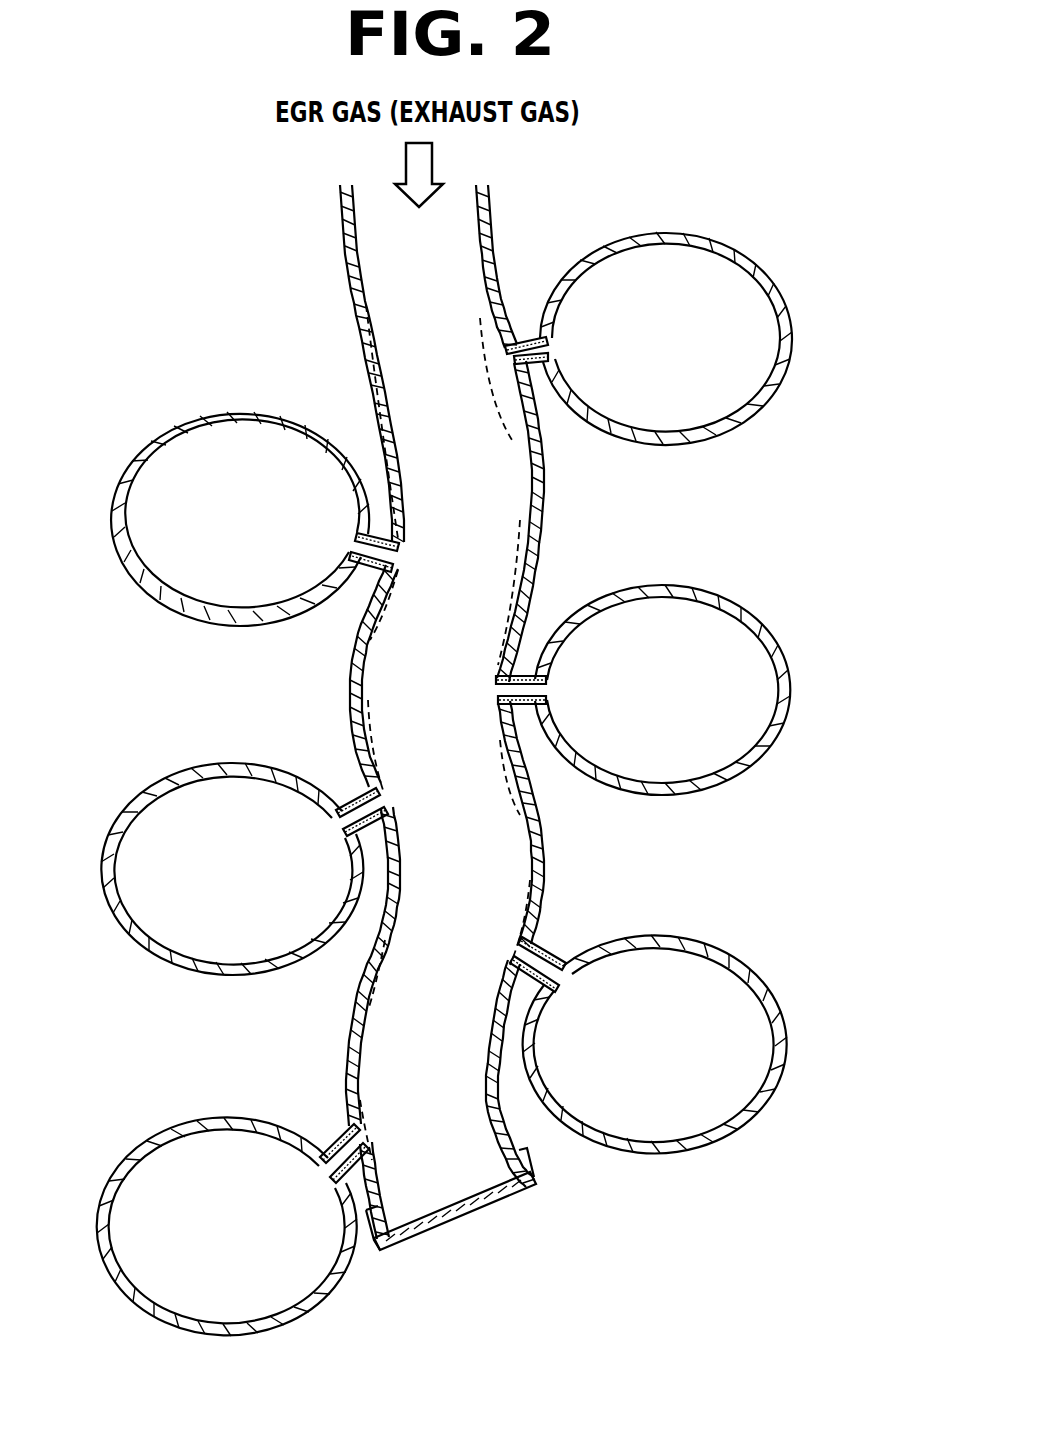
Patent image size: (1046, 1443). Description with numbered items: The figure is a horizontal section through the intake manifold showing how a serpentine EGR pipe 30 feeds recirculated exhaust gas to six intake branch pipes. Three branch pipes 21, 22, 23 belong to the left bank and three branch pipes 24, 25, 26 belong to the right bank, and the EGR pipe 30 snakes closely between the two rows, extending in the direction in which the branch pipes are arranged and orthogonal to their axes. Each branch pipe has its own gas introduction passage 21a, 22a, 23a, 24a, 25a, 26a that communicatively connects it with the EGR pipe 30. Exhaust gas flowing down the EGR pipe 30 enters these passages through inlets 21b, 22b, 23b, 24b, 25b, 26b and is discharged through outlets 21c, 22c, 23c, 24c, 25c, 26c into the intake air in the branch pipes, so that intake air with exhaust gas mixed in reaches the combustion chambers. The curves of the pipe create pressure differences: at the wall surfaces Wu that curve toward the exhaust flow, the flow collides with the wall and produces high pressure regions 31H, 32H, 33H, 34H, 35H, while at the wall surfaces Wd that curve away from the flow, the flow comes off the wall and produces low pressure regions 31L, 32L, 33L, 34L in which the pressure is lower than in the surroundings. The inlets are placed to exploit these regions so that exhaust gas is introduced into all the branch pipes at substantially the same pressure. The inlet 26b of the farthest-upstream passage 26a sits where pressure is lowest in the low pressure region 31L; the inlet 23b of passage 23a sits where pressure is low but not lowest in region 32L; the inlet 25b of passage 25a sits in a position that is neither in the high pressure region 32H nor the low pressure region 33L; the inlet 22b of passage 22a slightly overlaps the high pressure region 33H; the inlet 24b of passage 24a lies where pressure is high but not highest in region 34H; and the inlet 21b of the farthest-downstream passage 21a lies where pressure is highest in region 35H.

The branch pipe 21 is at (158, 1135).
The branch pipe 22 is at (165, 775).
The branch pipe 23 is at (165, 420).
The branch pipe 24 is at (705, 935).
The branch pipe 25 is at (708, 588).
The branch pipe 26 is at (712, 240).
The gas introduction passage 21a is at (342, 1140).
The inlet 21b is at (370, 1125).
The outlet 21c is at (328, 1175).
The gas introduction passage 22a is at (340, 800).
The inlet 22b is at (392, 800).
The outlet 22c is at (340, 822).
The gas introduction passage 23a is at (350, 575).
The inlet 23b is at (400, 549).
The outlet 23c is at (352, 540).
The gas introduction passage 24a is at (558, 960).
The inlet 24b is at (512, 945).
The outlet 24c is at (562, 988).
The gas introduction passage 25a is at (530, 650).
The inlet 25b is at (495, 683).
The outlet 25c is at (548, 692).
The gas introduction passage 26a is at (530, 336).
The inlet 26b is at (512, 357).
The outlet 26c is at (547, 348).
The EGR pipe 30 is at (342, 200).
The high pressure region 31H is at (366, 305).
The low pressure region 31L is at (480, 318).
The high pressure region 32H is at (520, 520).
The low pressure region 32L is at (398, 588).
The high pressure region 33H is at (372, 722).
The low pressure region 33L is at (500, 762).
The high pressure region 34H is at (527, 898).
The low pressure region 34L is at (372, 968).
The high pressure region 35H is at (360, 1100).
The wall surface Wu is at (348, 345).
The wall surface Wd is at (483, 290).